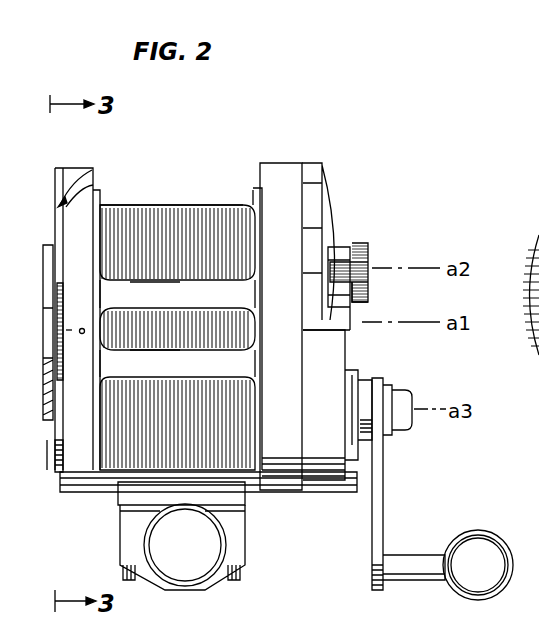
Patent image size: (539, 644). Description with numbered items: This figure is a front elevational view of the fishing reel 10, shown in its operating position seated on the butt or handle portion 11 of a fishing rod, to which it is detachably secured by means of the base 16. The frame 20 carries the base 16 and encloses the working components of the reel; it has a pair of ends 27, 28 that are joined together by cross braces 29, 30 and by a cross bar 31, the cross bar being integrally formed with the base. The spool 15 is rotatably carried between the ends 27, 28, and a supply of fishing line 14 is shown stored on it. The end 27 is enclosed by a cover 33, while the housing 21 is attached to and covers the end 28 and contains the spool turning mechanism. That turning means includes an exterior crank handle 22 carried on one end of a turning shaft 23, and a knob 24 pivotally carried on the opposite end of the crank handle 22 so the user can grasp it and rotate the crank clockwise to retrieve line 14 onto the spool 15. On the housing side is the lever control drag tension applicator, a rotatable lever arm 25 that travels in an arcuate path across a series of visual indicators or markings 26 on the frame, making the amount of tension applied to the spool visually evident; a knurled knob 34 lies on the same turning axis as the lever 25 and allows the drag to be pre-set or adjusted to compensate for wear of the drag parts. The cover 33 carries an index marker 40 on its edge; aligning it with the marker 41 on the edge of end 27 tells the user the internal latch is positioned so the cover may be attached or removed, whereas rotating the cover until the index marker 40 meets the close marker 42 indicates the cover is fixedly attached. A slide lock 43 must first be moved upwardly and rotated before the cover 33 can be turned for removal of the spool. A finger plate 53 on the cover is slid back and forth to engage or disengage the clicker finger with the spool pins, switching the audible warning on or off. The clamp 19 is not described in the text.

The fishing reel 10 is at (366, 157).
The handle portion 11 is at (177, 562).
The fishing line 14 is at (176, 210).
The spool 15 is at (102, 197).
The base 16 is at (233, 496).
The clamp 19 is at (246, 578).
The frame 20 is at (313, 197).
The housing 21 is at (322, 436).
The crank handle 22 is at (383, 509).
The turning shaft 23 is at (368, 410).
The knob 24 is at (480, 548).
The lever arm 25 is at (370, 266).
The visual indicators 26 is at (325, 242).
The end 27 is at (76, 170).
The end 28 is at (283, 165).
The cross brace 29 is at (148, 282).
The cross brace 30 is at (150, 350).
The cross bar 31 is at (110, 494).
The cover 33 is at (57, 174).
The knurled knob 34 is at (372, 292).
The index marker 40 is at (92, 170).
The marker 41 is at (72, 330).
The close marker 42 is at (93, 185).
The slide lock 43 is at (57, 472).
The finger plate 53 is at (48, 322).